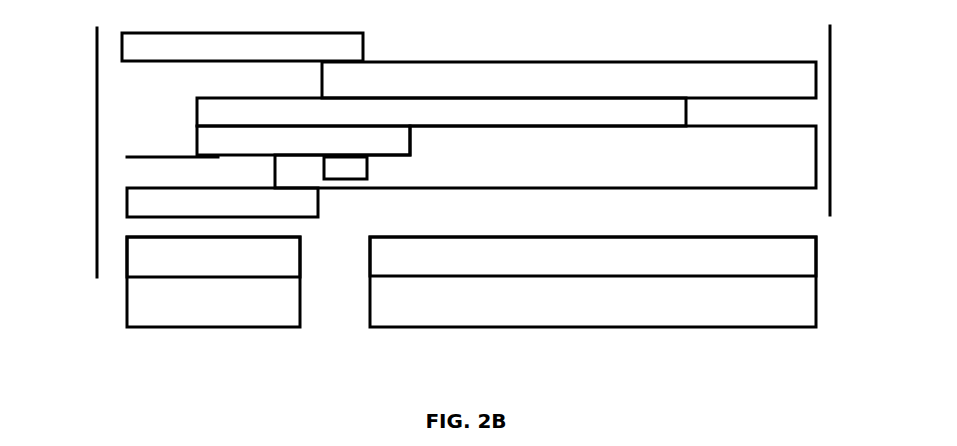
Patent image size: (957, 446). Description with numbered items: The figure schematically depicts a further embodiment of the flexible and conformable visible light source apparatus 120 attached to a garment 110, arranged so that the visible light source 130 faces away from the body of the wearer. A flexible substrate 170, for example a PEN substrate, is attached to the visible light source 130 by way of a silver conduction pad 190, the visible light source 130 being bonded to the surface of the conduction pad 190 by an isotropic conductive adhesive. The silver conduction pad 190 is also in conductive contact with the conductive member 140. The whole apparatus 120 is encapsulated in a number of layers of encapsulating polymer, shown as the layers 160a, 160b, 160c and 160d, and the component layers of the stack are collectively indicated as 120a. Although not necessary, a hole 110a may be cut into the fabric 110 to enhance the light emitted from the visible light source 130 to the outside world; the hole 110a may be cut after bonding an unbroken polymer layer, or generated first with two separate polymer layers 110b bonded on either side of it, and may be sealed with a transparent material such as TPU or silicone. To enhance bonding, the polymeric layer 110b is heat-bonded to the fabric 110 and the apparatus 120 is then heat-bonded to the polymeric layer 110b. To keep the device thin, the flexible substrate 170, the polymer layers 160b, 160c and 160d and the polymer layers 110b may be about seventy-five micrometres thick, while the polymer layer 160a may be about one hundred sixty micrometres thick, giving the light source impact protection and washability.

The garment 110 is at (471, 282).
The hole 110a is at (337, 315).
The polymeric layer 110b is at (471, 257).
The flexible and conformable visible light source apparatus 120 is at (66, 152).
The component layers of the apparatus 120a is at (859, 120).
The visible light source 130 is at (345, 168).
The conductive member 140 is at (172, 145).
The encapsulating polymer layer 160a is at (545, 157).
The encapsulating polymer layer 160b is at (569, 80).
The encapsulating polymer layer 160c is at (222, 202).
The encapsulating polymer layer 160d is at (242, 47).
The flexible substrate 170 is at (441, 112).
The silver conduction pad 190 is at (303, 140).